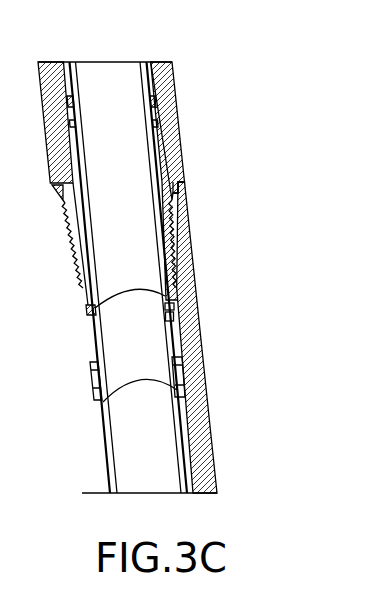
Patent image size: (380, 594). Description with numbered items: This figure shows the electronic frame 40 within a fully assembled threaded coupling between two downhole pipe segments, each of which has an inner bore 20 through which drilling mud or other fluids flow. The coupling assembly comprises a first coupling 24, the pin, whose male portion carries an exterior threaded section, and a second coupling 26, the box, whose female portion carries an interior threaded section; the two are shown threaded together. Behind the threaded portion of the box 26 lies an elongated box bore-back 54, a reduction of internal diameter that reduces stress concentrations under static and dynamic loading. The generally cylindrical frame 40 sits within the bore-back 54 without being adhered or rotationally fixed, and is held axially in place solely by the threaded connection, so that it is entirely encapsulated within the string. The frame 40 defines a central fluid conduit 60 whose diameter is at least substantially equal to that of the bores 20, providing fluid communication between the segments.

The inner bore 20 is at (132, 88).
The first coupling 24 is at (157, 178).
The second coupling 26 is at (72, 308).
The fluid conduit 60 is at (152, 330).
The electronic frame 40 is at (173, 351).
The box bore-back 54 is at (78, 378).